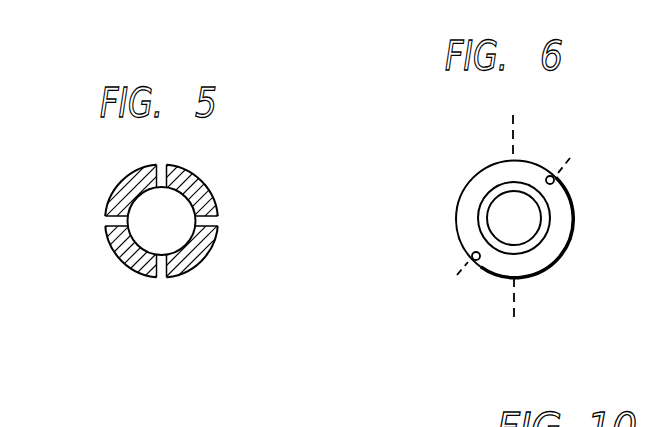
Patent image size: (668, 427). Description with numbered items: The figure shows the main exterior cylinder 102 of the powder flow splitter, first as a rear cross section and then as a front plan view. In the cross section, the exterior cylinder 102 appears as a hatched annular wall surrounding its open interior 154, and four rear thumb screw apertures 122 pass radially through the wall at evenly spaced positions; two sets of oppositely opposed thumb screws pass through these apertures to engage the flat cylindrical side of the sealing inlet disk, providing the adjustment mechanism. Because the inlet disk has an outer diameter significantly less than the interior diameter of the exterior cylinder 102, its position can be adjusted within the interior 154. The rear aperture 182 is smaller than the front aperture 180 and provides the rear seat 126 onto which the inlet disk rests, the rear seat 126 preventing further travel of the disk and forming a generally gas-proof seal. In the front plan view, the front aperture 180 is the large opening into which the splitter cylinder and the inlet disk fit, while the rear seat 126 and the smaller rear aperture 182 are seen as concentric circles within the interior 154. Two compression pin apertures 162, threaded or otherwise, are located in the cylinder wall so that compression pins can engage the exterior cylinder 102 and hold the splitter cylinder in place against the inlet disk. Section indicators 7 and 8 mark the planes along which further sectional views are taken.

In FIG. 5, the exterior cylinder 102 is at (117, 188).
In FIG. 6, the exterior cylinder 102 is at (567, 247).
In FIG. 5, the rear thumb screw apertures 122 is at (162, 171).
In FIG. 5, the interior 154 is at (178, 207).
In FIG. 6, the interior 154 is at (497, 223).
In FIG. 5, the rear aperture 182 is at (177, 242).
In FIG. 6, the rear seat 126 is at (487, 203).
In FIG. 6, the compression pin apertures 162 is at (555, 182).
In FIG. 6, the front aperture 180 is at (532, 247).
In FIG. 6, the section line 7- 7 is at (513, 115).
In FIG. 6, the section line 8- 8 is at (494, 198).